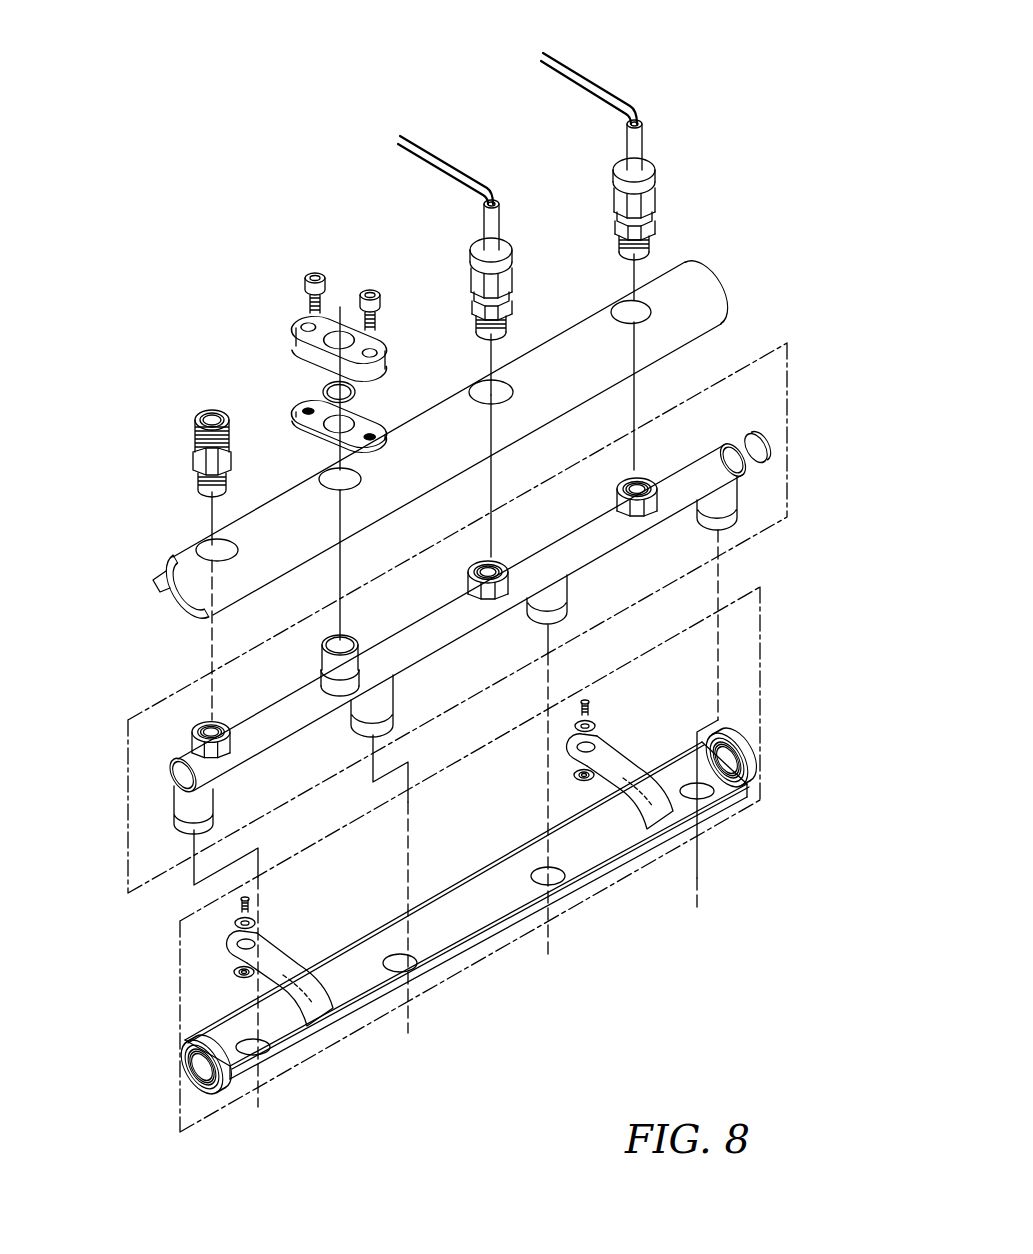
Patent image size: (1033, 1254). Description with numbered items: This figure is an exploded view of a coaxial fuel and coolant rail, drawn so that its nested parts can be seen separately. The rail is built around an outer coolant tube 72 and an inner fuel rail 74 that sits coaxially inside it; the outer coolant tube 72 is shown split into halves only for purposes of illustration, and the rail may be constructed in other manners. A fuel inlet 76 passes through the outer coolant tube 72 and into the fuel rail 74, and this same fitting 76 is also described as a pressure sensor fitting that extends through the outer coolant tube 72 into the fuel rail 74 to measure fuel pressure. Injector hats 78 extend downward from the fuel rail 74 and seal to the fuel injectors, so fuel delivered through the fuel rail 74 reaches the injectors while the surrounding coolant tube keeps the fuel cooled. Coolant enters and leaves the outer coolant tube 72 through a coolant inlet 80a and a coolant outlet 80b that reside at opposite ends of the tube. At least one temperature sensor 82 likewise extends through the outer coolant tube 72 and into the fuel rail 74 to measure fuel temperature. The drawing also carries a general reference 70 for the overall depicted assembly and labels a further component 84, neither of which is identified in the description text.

The fuel rail assembly 70 is at (277, 144).
The outer coolant tube 72 is at (583, 373).
The inner fuel rail 74 is at (591, 569).
The fuel inlet 76 is at (205, 465).
The injector hats 78 is at (720, 507).
The coolant inlet 80a is at (195, 1070).
The coolant outlet 80b is at (745, 758).
The temperature sensor 82 is at (640, 147).
The mounting flange assembly 84 is at (312, 357).